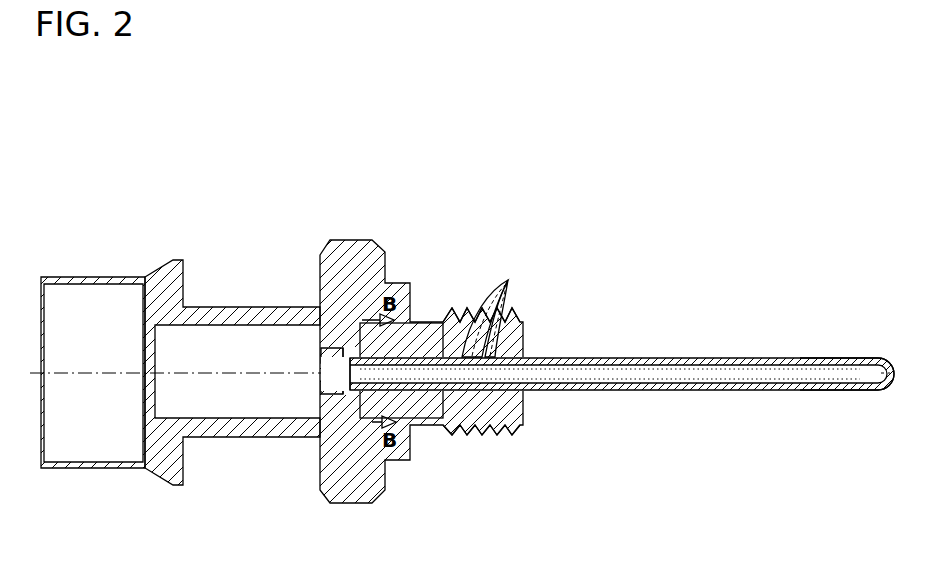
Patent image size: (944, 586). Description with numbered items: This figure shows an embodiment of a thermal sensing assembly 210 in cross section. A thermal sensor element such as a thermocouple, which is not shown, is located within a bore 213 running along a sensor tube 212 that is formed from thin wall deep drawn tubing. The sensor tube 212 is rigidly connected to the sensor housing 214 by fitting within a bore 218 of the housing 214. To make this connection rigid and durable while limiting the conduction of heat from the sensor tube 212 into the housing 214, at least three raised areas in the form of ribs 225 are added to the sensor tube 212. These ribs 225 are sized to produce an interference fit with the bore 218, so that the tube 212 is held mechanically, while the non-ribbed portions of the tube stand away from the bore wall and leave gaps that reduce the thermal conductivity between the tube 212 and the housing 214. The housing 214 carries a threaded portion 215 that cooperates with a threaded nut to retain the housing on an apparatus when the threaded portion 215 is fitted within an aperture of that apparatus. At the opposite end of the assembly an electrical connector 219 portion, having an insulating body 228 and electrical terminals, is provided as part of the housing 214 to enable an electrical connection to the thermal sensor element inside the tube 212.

The thermal sensing assembly 210 is at (96, 206).
The sensor tube 212 is at (682, 358).
The bore 213 is at (578, 365).
The sensor housing 214 is at (363, 262).
The threaded portion 215 is at (475, 437).
The bore 218 is at (439, 393).
The electrical connector 219 is at (110, 469).
The ribs 225 is at (503, 305).
The insulating body 228 is at (60, 438).